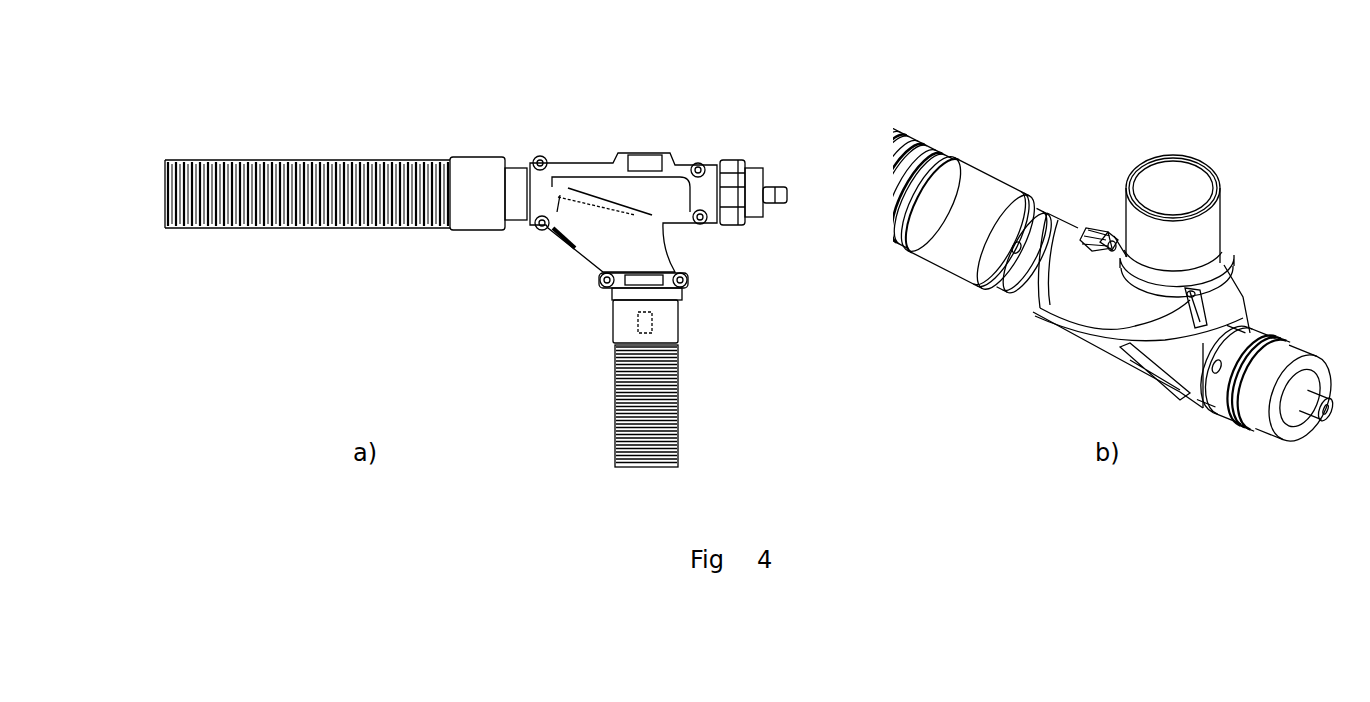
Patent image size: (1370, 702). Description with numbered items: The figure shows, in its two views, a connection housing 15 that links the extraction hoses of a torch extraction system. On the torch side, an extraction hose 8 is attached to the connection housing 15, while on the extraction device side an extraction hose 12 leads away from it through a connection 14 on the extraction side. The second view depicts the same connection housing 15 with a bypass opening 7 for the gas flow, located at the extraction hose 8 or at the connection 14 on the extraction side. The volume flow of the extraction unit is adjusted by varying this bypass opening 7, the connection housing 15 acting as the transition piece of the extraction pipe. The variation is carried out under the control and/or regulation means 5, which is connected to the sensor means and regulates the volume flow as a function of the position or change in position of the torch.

The extraction hose 8 is at (315, 205).
The connection housing 15 is at (661, 125).
The connection 14 is at (648, 322).
The extraction hose 12 is at (637, 420).
The regulation means 5 is at (1086, 230).
The bypass opening 7 is at (1097, 233).